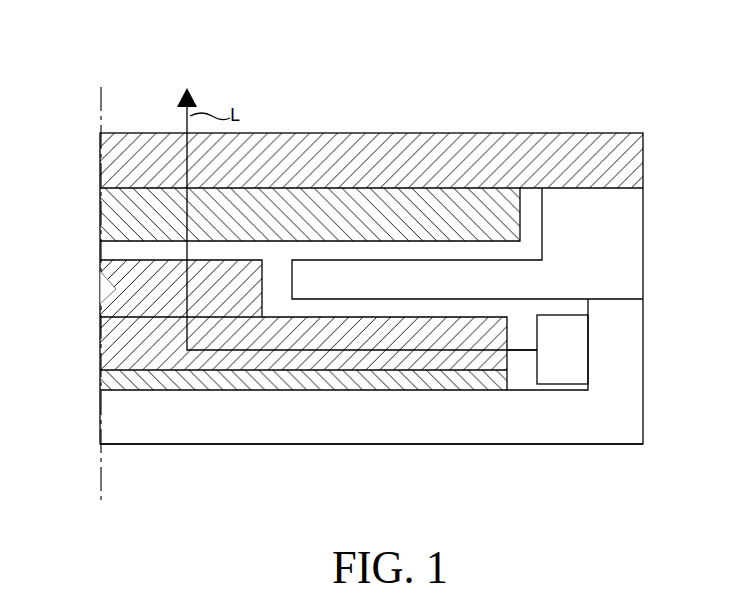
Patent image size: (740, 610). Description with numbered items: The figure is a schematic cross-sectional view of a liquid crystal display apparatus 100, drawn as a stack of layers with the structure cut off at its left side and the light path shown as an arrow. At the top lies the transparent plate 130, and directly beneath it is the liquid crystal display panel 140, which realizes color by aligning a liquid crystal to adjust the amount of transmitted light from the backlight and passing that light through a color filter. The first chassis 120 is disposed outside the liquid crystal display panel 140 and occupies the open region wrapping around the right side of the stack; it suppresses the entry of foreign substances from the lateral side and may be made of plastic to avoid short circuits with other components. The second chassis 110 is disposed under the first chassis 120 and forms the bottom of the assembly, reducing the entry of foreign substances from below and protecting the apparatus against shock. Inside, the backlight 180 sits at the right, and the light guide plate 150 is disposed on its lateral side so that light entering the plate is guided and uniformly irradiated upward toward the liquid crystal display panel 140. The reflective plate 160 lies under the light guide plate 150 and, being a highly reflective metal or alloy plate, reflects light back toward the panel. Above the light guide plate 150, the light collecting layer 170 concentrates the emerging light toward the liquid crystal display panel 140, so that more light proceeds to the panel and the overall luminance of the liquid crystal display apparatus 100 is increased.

The liquid crystal display apparatus 100 is at (652, 44).
The second chassis 110 is at (118, 420).
The first chassis 120 is at (622, 227).
The transparent plate 130 is at (622, 160).
The liquid crystal display panel 140 is at (118, 217).
The light guide plate 150 is at (118, 352).
The reflective plate 160 is at (118, 383).
The light collecting layer 170 is at (118, 305).
The backlight 180 is at (558, 358).